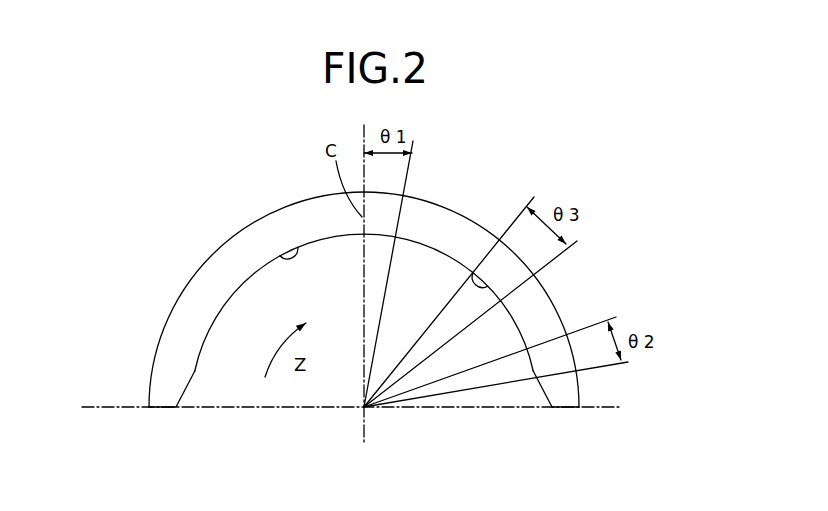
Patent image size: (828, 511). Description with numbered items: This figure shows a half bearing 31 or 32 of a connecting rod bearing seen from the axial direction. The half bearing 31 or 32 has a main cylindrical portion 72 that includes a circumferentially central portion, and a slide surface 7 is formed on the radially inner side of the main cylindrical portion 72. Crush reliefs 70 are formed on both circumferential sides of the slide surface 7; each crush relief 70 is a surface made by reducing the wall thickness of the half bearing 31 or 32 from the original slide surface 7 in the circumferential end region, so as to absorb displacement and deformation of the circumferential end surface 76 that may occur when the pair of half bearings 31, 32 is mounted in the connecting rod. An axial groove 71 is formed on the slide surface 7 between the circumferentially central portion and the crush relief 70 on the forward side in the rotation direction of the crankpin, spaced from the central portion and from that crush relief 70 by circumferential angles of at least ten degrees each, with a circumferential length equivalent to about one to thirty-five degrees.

The slide surface 7 is at (283, 258).
The crush relief 70 is at (185, 390).
The axial groove 71 is at (473, 270).
The main cylindrical portion 72 is at (291, 230).
The circumferential end surface 76 is at (160, 408).
The half bearing 31 is at (512, 302).
The half bearing 32 is at (548, 296).